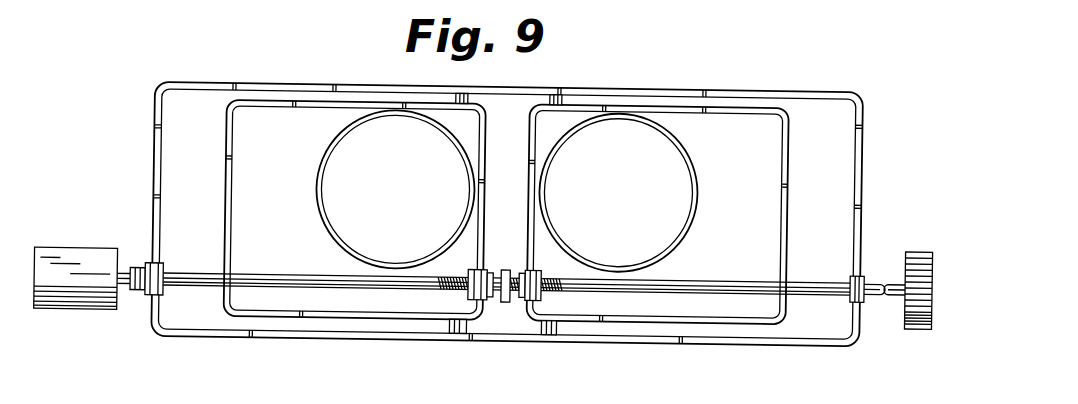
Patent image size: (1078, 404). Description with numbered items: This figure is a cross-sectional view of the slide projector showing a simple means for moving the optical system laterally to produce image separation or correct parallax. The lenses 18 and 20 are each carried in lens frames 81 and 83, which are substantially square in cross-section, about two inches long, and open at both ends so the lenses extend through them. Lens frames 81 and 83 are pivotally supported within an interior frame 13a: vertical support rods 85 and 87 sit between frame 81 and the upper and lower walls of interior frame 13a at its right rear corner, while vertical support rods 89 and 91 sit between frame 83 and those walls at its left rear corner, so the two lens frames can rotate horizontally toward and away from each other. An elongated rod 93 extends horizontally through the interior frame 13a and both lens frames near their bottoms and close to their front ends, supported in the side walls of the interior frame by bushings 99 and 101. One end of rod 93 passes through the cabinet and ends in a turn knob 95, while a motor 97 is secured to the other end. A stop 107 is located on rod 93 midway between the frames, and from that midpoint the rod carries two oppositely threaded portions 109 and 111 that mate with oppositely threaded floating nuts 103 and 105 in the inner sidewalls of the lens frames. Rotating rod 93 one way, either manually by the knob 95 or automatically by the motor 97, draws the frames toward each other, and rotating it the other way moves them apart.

The interior frame 13a is at (838, 88).
The lens frame 81 is at (224, 184).
The lens frame 83 is at (786, 191).
The lens 18 is at (380, 111).
The lens 20 is at (646, 116).
The vertical support rod 85 is at (467, 100).
The vertical support rod 89 is at (560, 97).
The vertical support rod 87 is at (450, 327).
The vertical support rod 91 is at (558, 327).
The motor 97 is at (69, 266).
The bushing 99 is at (159, 274).
The bushing 101 is at (852, 300).
The floating nut 103 is at (468, 272).
The floating nut 105 is at (541, 272).
The stop 107 is at (505, 276).
The threaded portion 109 is at (454, 294).
The threaded portion 111 is at (554, 292).
The elongated rod 93 is at (861, 270).
The turn knob 95 is at (920, 247).